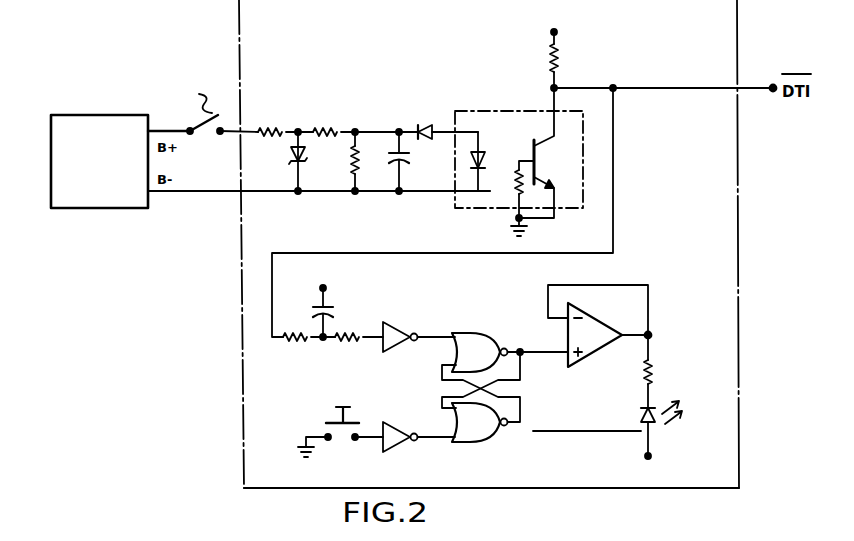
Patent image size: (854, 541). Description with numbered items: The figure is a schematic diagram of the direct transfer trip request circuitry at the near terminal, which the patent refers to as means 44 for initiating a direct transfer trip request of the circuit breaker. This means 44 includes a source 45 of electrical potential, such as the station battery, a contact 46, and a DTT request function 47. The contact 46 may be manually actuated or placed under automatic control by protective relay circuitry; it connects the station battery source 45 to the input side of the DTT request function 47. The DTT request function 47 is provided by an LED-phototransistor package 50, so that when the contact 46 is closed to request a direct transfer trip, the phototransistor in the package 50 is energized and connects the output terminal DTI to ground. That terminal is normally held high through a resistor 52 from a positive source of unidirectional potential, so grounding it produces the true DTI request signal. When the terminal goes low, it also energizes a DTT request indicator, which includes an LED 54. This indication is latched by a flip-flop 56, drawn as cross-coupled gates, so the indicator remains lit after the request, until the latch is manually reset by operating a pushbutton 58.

The means 44 is at (228, 27).
The source of electrical potential 45 is at (96, 212).
The contact 46 is at (207, 140).
The DTT request function 47 is at (238, 248).
The LED-phototransistor package 50 is at (498, 109).
The resistor 52 is at (563, 70).
The LED 54 is at (661, 420).
The flip-flop 56 is at (436, 400).
The pushbutton 58 is at (326, 427).